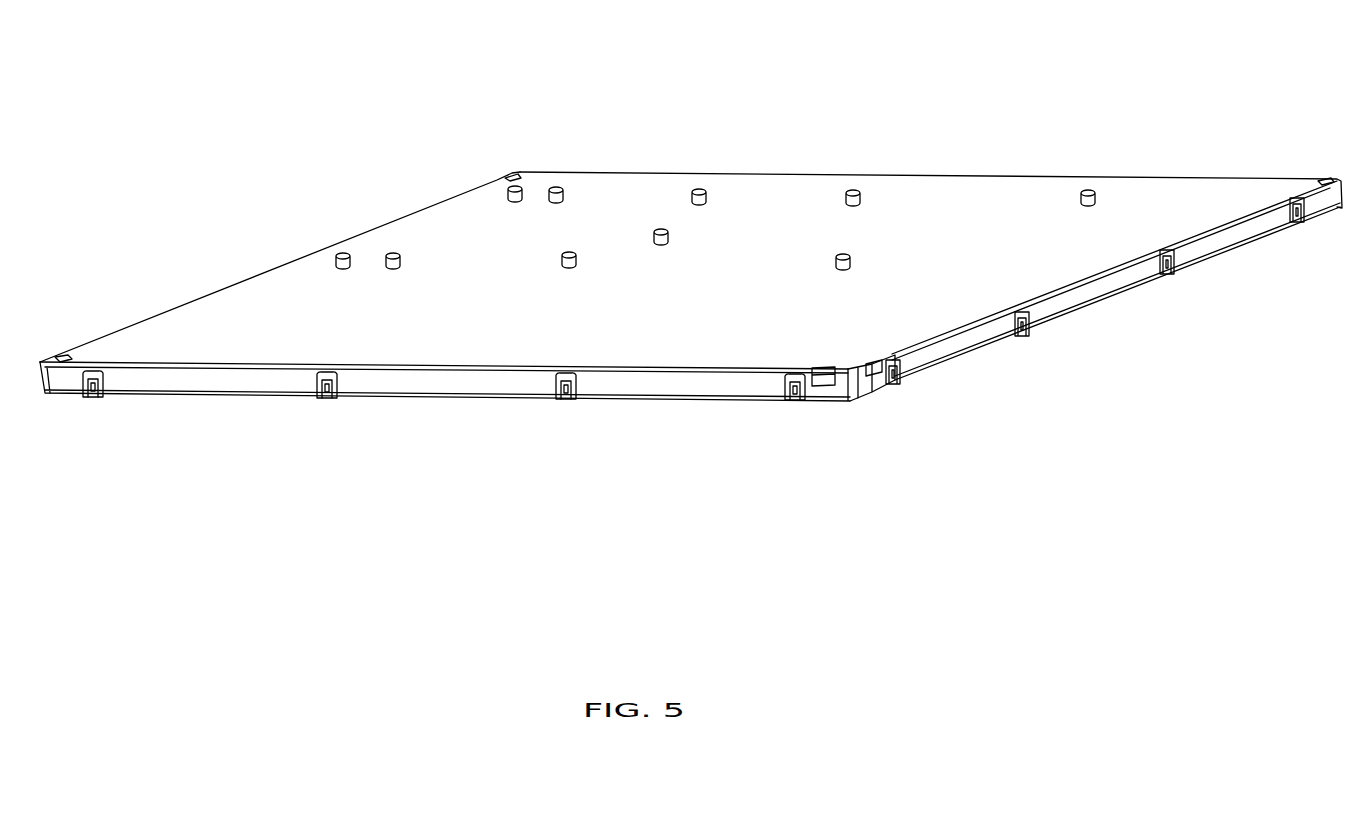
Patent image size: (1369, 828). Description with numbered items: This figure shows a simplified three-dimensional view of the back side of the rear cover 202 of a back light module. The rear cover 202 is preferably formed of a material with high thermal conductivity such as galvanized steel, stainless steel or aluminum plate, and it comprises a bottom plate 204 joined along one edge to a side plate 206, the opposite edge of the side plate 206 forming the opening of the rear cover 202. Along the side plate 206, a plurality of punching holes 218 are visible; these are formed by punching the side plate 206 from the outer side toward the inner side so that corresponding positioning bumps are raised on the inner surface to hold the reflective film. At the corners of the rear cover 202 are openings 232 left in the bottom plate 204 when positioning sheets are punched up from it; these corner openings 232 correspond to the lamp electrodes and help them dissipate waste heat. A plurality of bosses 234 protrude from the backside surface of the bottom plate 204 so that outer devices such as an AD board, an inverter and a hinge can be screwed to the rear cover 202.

The rear cover 202 is at (434, 194).
The bottom plate 204 is at (798, 173).
The side plate 206 is at (258, 383).
The punching holes 218 is at (125, 379).
The openings 232 is at (65, 358).
The bosses 234 is at (565, 190).